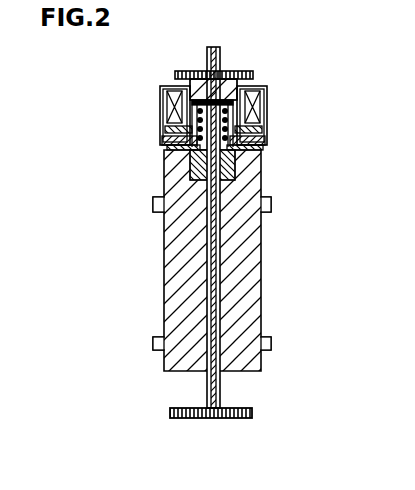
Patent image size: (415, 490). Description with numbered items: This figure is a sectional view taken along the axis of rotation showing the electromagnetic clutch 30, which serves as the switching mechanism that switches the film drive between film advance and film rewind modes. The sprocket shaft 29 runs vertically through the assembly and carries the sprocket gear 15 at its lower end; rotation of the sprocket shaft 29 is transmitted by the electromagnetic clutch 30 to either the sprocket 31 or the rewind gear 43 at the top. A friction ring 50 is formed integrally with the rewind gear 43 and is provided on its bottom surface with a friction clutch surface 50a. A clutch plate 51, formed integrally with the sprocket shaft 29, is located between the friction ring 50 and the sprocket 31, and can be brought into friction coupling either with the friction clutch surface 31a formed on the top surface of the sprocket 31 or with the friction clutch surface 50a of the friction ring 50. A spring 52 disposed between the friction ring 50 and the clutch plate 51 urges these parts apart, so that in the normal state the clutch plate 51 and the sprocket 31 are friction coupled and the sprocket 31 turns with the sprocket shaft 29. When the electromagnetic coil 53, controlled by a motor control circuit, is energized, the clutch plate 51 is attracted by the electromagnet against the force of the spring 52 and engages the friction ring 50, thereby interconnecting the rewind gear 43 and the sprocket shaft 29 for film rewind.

The sprocket gear 15 is at (247, 410).
The sprocket shaft 29 is at (215, 388).
The electromagnetic clutch 30 is at (147, 112).
The sprocket 31 is at (257, 250).
The friction clutch surface 31a is at (260, 185).
The rewind gear 43 is at (243, 73).
The friction ring 50 is at (263, 140).
The friction clutch surface 50a is at (190, 165).
The clutch plate 51 is at (262, 153).
The spring 52 is at (167, 125).
The electromagnetic coil 53 is at (255, 115).